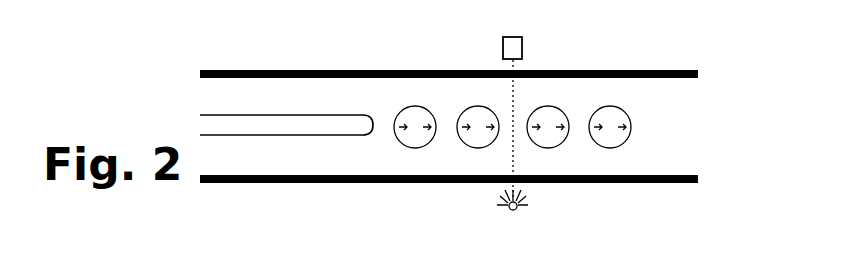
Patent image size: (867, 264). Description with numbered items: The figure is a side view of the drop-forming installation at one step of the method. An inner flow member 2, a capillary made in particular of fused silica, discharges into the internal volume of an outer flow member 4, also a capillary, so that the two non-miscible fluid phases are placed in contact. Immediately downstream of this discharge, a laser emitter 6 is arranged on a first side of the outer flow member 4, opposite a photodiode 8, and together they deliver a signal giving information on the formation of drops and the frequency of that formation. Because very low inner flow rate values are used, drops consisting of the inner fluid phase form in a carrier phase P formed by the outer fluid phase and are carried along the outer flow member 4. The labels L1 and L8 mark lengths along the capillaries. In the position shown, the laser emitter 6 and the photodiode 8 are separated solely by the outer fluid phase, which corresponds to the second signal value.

The inner flow member 2 is at (200, 123).
The outer flow member 4 is at (350, 70).
The laser emitter 6 is at (518, 208).
The photodiode 8 is at (522, 50).
The carrier phase P is at (442, 100).
The length L1 is at (258, 122).
The length L8 is at (304, 100).